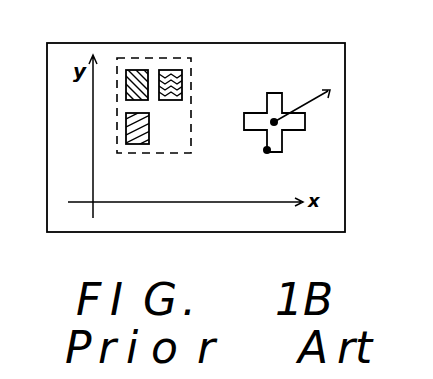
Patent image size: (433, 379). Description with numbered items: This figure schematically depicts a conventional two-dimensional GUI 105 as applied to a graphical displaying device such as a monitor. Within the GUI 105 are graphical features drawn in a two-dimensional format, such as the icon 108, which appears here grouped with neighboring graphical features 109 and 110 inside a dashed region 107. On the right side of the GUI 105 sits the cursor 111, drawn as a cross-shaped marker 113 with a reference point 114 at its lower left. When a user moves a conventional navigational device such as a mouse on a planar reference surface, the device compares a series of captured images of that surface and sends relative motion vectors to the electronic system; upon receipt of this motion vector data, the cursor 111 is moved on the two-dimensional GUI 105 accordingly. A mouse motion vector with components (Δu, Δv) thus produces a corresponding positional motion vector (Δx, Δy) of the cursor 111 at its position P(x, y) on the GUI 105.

The GUI 105 is at (325, 232).
The group of figures 107 is at (170, 153).
The icon 108 is at (137, 144).
The figure 109 is at (171, 70).
The figure 110 is at (135, 70).
The cursor 111 is at (277, 126).
The cursor 113 is at (268, 94).
The reference point 114 is at (267, 150).